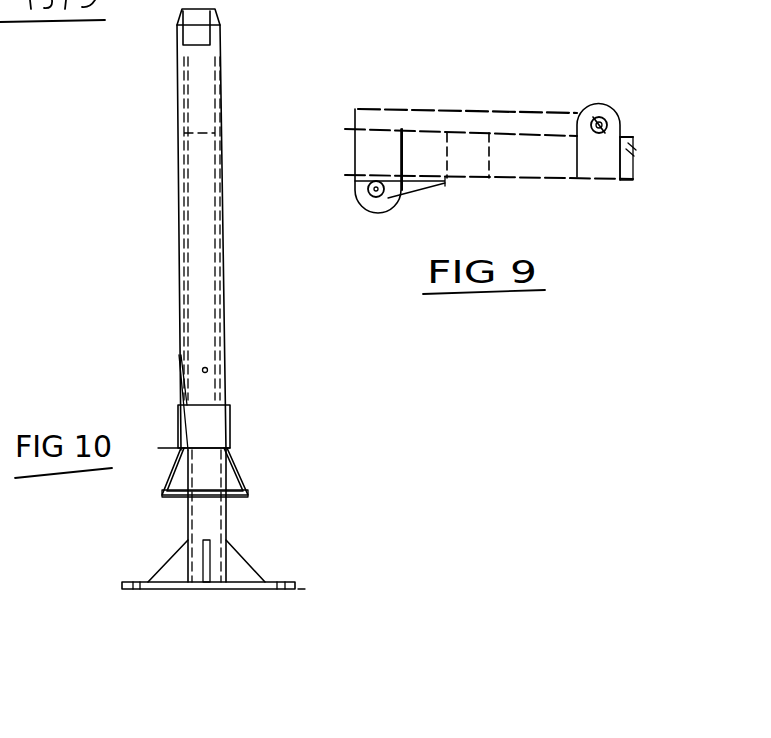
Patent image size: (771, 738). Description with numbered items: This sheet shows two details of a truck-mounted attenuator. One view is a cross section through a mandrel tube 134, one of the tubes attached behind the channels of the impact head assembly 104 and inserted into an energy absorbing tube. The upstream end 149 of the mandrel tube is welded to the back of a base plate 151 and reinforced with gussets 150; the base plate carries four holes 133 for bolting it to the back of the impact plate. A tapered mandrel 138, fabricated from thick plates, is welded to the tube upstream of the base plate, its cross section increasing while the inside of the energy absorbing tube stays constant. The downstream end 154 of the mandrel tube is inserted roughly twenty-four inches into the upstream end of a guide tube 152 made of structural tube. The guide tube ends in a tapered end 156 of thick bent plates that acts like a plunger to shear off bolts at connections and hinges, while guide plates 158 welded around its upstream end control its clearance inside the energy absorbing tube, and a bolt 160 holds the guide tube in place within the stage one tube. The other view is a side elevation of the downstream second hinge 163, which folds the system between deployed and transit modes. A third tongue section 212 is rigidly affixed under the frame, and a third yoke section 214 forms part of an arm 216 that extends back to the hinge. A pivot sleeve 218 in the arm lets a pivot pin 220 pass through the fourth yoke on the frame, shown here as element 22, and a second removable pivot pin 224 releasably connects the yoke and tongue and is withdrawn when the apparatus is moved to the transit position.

In FIG. 9, the arm 22 is at (612, 128).
In FIG. 10, the impact head assembly 104 is at (207, 590).
In FIG. 10, the holes 133 is at (285, 578).
In FIG. 10, the mandrel tube 134 is at (225, 348).
In FIG. 10, the tapered mandrel 138 is at (167, 475).
In FIG. 10, the upstream end 149 is at (225, 528).
In FIG. 10, the gussets 150 is at (262, 565).
In FIG. 10, the base plate 151 is at (242, 590).
In FIG. 10, the guide tube 152 is at (220, 97).
In FIG. 10, the downstream end 154 is at (206, 250).
In FIG. 10, the tapered end 156 is at (222, 15).
In FIG. 10, the guide plates 158 is at (208, 402).
In FIG. 10, the bolt 160 is at (202, 370).
In FIG. 9, the second hinge 163 is at (631, 88).
In FIG. 9, the third tongue section 212 is at (415, 187).
In FIG. 9, the third yoke section 214 is at (385, 193).
In FIG. 9, the arm 216 is at (463, 122).
In FIG. 9, the pivot sleeve 218 is at (595, 122).
In FIG. 9, the pivot pin 220 is at (607, 120).
In FIG. 9, the second removable pivot pin 224 is at (378, 215).